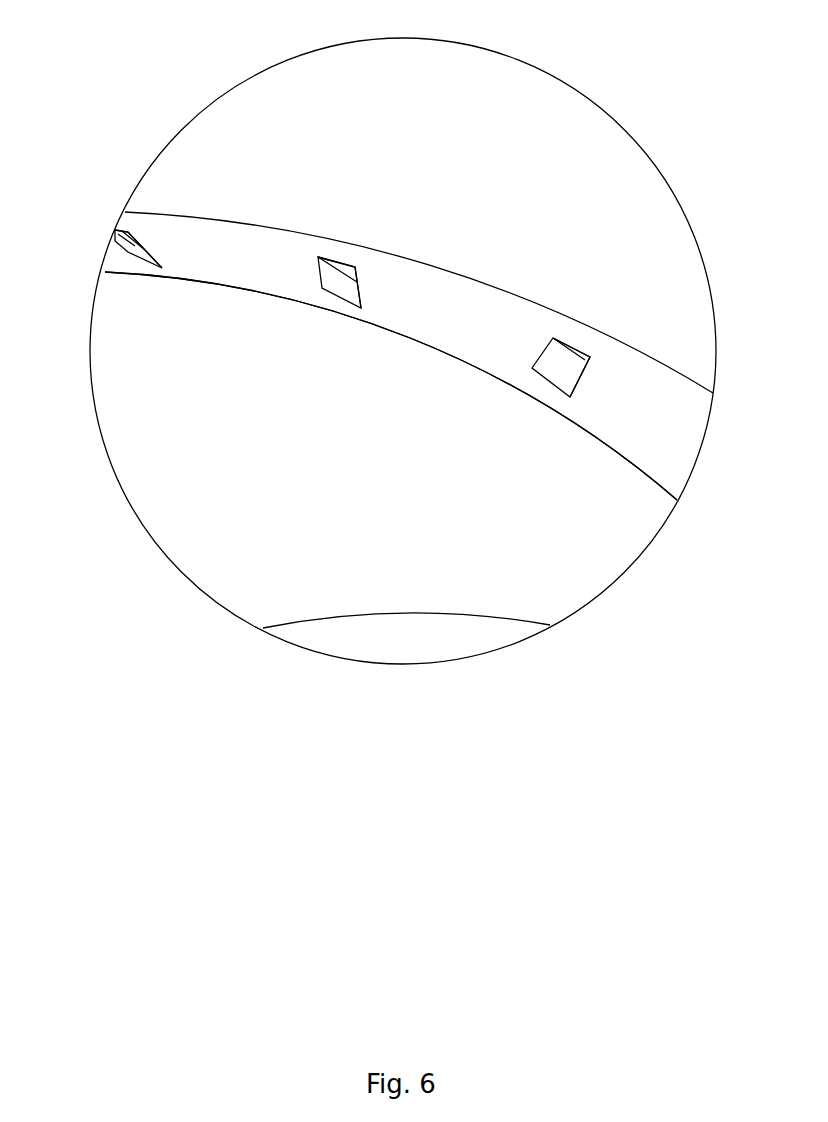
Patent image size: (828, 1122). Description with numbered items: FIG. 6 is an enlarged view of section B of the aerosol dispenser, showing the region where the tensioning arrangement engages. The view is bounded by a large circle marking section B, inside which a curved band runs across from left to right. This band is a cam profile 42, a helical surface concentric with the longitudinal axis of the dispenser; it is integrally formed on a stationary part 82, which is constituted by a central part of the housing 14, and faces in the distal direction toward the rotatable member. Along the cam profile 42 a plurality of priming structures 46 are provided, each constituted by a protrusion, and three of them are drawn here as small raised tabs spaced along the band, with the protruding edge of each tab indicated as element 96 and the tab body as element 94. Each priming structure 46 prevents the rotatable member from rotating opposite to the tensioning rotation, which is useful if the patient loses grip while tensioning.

The section B is at (248, 78).
The housing 14 is at (357, 115).
The stationary part 82 is at (447, 115).
The cam profile 42 is at (453, 305).
The priming structure 46 is at (141, 299).
The tab 94 is at (130, 250).
The tab edge 96 is at (127, 221).